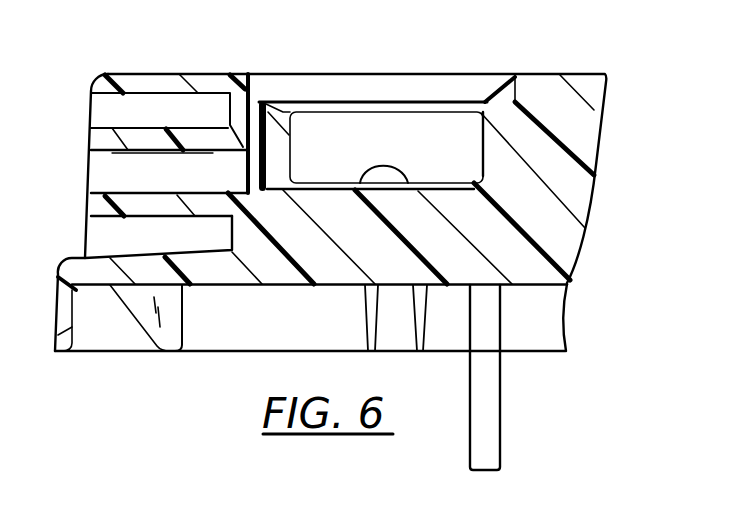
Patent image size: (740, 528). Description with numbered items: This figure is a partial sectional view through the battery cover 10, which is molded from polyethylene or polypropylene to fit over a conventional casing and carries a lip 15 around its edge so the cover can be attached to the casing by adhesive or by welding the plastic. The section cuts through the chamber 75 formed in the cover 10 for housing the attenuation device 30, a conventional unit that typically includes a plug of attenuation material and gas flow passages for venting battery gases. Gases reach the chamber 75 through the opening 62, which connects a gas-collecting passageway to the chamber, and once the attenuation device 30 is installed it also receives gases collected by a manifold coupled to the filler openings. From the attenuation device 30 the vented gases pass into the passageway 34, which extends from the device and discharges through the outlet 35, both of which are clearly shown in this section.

The cover 10 is at (616, 30).
The lip 15 is at (56, 351).
The attenuation device 30 is at (418, 93).
The passageway 34 is at (208, 184).
The outlet 35 is at (88, 194).
The opening 62 is at (371, 169).
The chamber 75 is at (480, 143).